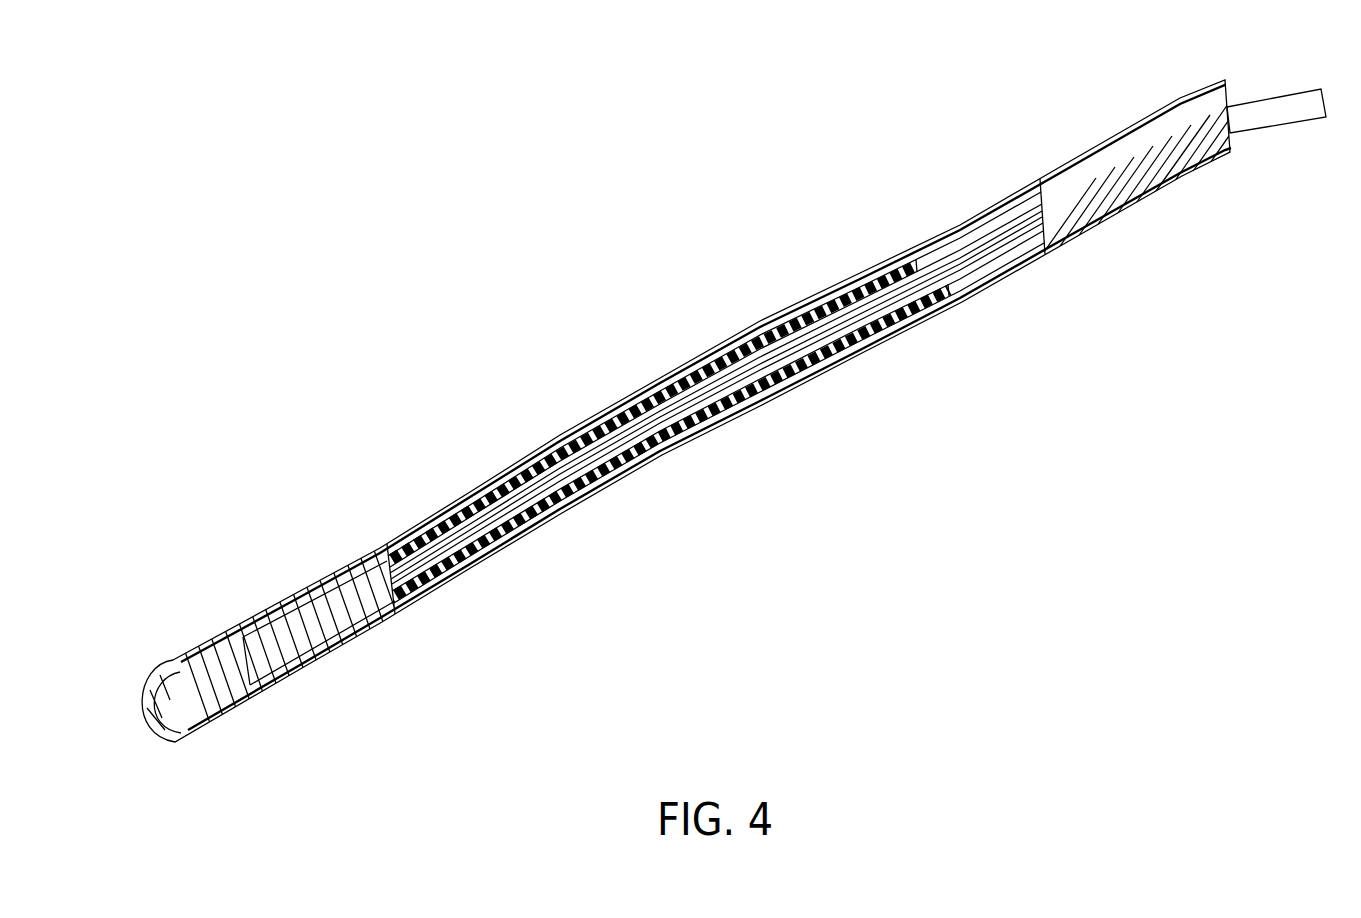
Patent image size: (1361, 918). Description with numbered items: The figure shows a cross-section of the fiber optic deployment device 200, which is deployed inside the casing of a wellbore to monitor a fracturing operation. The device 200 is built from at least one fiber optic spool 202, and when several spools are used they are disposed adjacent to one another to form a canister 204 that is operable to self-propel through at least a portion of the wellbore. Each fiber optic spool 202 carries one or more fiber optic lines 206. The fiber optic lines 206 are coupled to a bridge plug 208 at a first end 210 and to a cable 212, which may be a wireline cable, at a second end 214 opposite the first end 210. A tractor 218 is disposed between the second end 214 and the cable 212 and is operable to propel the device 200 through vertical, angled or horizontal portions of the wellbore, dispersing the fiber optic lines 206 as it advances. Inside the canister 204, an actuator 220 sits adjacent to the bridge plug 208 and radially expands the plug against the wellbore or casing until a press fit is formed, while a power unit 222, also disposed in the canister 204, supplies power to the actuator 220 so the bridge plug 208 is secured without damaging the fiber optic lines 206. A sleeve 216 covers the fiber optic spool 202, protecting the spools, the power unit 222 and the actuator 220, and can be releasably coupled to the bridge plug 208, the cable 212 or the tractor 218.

The fiber optic deployment device 200 is at (603, 206).
The fiber optic spool 202 is at (603, 428).
The canister 204 is at (806, 286).
The fiber optic lines 206 is at (609, 503).
The bridge plug 208 is at (346, 570).
The first end 210 is at (373, 528).
The cable 212 is at (1295, 100).
The second end 214 is at (982, 203).
The sleeve 216 is at (699, 362).
The tractor 218 is at (1125, 130).
The actuator 220 is at (461, 576).
The power unit 222 is at (723, 433).